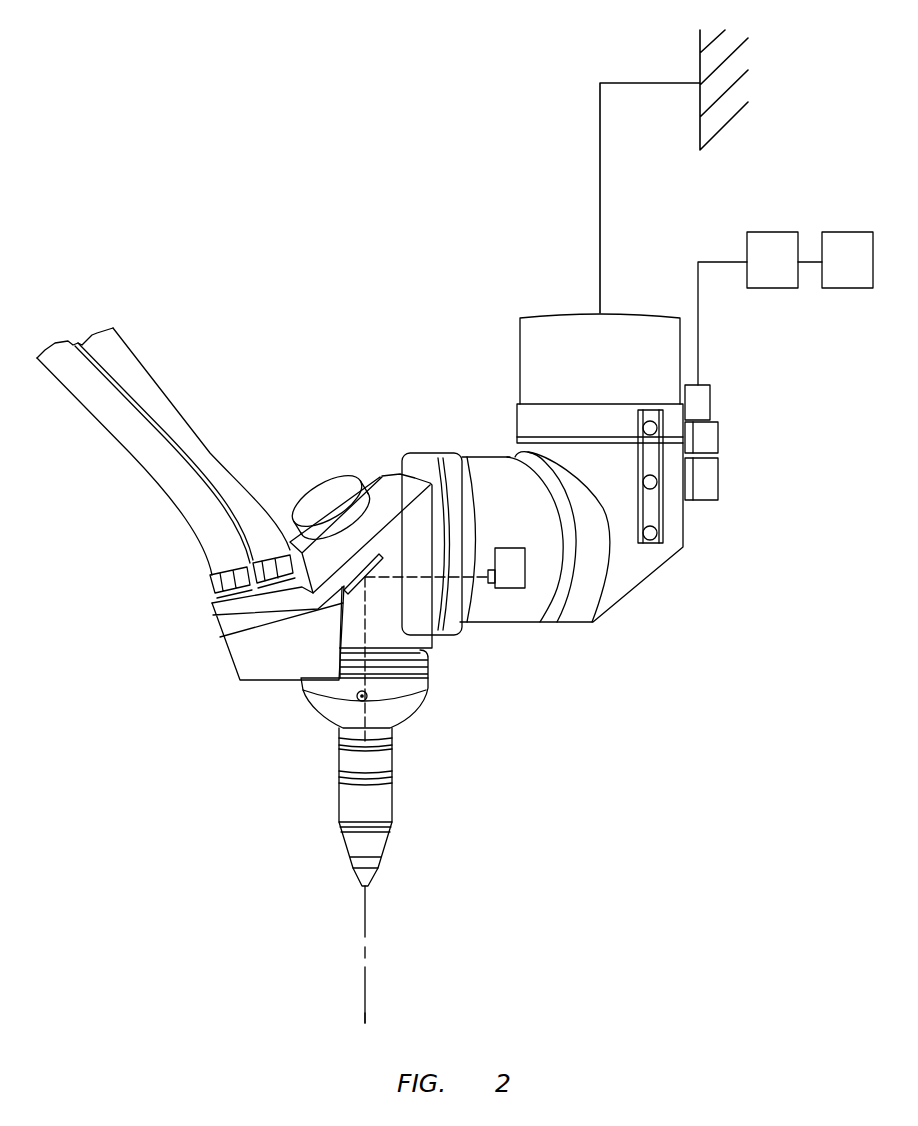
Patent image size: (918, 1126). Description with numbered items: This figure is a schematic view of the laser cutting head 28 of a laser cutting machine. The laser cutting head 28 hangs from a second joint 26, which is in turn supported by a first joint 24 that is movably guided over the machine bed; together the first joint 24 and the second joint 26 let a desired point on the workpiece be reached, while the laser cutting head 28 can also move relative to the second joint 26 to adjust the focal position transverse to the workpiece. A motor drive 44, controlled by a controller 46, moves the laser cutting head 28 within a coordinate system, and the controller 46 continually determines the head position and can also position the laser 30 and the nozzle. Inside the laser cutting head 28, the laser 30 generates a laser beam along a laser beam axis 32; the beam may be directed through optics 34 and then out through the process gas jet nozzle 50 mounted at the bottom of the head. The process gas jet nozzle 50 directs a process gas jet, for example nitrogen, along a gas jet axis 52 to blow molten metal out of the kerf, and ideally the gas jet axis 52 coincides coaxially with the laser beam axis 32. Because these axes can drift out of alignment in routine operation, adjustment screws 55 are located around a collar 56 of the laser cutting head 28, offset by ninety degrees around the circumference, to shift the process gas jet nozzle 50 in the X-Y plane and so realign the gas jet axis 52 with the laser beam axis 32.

The first joint 24 is at (297, 490).
The second joint 26 is at (515, 408).
The laser cutting head 28 is at (253, 720).
The laser 30 is at (510, 582).
The laser beam axis 32 is at (365, 1013).
The optics 34 is at (343, 480).
The motor drive 44 is at (785, 276).
The controller 46 is at (860, 276).
The process gas jet nozzle 50 is at (378, 842).
The gas jet axis 52 is at (365, 987).
The adjustment screws 55 is at (358, 699).
The collar 56 is at (405, 687).